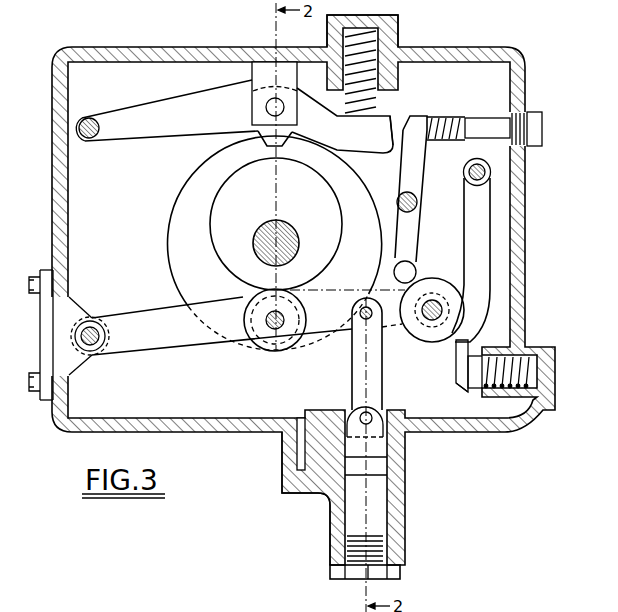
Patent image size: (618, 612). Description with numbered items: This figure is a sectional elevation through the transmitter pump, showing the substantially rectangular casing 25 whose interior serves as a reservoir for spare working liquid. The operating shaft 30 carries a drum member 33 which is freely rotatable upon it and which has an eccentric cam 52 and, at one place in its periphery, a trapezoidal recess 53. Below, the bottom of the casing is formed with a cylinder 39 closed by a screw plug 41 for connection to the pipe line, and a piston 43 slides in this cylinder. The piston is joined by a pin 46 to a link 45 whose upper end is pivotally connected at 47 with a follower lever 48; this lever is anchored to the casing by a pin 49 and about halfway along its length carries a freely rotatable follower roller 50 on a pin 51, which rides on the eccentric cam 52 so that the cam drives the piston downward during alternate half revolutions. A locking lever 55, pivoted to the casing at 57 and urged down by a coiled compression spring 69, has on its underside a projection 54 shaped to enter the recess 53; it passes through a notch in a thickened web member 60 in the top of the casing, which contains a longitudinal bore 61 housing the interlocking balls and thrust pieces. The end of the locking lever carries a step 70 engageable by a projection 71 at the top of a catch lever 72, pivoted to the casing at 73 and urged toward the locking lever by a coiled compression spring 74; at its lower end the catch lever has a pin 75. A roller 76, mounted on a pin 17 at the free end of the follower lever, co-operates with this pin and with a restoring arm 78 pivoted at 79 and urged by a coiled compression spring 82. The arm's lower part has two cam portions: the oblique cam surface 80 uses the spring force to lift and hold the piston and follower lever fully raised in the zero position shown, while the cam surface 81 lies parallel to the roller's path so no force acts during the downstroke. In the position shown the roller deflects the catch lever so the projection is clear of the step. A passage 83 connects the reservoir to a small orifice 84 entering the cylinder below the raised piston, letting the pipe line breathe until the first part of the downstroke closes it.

The casing 25 is at (177, 55).
The coiled compression spring 69 is at (400, 47).
The web member 60 is at (293, 75).
The longitudinal bore 61 is at (280, 103).
The operating shaft 30 is at (293, 240).
The trapezoidal recess 53 is at (293, 163).
The eccentric cam 52 is at (211, 223).
The drum member 33 is at (183, 283).
The locking lever pivot 57 is at (87, 118).
The locking lever 55 is at (140, 113).
The projection 54 is at (238, 135).
The step 70 is at (392, 125).
The catch lever 72 is at (422, 168).
The catch projection 71 is at (408, 128).
The catch lever pivot 73 is at (418, 203).
The pin 75 is at (410, 265).
The coiled compression spring 74 is at (447, 117).
The restoring arm pivot 79 is at (491, 170).
The restoring arm 78 is at (488, 223).
The pin 17 is at (425, 322).
The roller 76 is at (455, 296).
The cam surface 80 is at (468, 332).
The cam surface 81 is at (461, 392).
The coiled compression spring 82 is at (500, 372).
The pin 49 is at (92, 347).
The follower lever 48 is at (172, 344).
The follower roller 50 is at (259, 334).
The pin 51 is at (267, 317).
The link 45 is at (402, 412).
The pivot 47 is at (361, 320).
The piston 43 is at (379, 452).
The pin 46 is at (370, 422).
The cylinder 39 is at (402, 530).
The screw plug 41 is at (401, 568).
The passage 83 is at (283, 448).
The orifice 84 is at (327, 493).